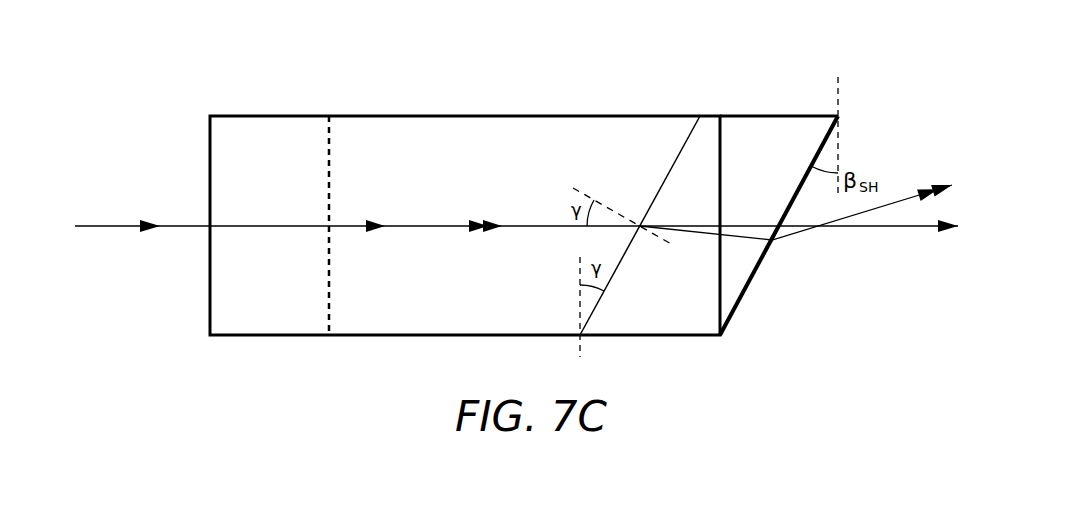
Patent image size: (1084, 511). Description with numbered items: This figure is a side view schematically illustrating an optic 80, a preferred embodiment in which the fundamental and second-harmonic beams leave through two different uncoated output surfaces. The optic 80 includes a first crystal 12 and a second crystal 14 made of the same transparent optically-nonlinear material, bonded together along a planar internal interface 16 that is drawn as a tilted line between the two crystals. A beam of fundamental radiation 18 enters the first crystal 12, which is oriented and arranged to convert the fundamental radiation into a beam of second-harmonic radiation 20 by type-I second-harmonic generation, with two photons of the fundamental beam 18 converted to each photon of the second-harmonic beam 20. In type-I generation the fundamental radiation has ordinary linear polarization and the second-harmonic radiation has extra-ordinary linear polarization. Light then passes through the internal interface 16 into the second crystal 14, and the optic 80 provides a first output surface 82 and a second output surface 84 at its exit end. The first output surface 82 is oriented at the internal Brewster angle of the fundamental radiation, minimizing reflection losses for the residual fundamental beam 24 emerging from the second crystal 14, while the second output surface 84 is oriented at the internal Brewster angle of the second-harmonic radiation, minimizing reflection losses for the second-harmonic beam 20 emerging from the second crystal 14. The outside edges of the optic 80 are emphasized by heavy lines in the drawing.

The optic 80 is at (178, 70).
The first crystal 12 is at (519, 303).
The second crystal 14 is at (673, 301).
The planar internal interface 16 is at (682, 148).
The first output surface 82 is at (773, 180).
The second output surface 84 is at (750, 278).
The beam of fundamental radiation 18 is at (113, 222).
The beam of second-harmonic radiation 20 is at (897, 197).
The residual fundamental beam 24 is at (890, 230).